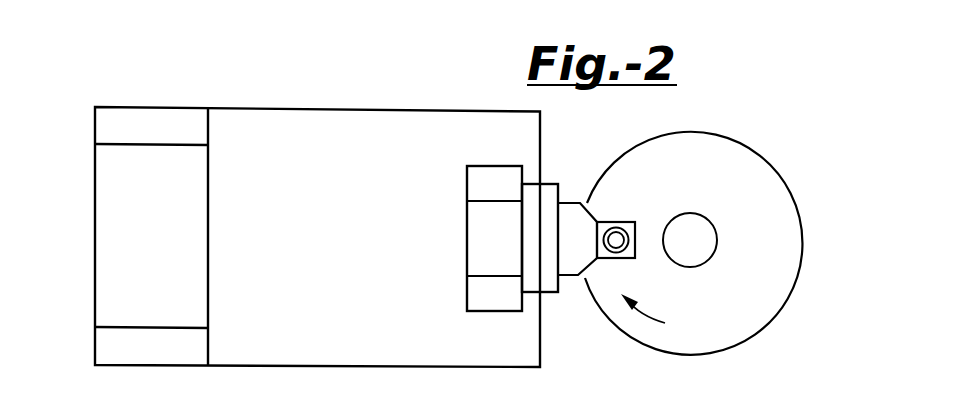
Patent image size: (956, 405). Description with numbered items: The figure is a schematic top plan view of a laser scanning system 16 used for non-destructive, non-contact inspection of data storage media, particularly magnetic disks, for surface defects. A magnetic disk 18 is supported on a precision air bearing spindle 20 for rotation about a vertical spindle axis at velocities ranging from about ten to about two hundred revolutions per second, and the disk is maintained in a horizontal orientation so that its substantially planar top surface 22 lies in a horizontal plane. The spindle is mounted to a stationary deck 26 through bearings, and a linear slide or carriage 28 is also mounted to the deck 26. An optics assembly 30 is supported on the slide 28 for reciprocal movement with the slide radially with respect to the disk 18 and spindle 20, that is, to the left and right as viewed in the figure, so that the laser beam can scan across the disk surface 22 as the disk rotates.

The laser scanning system 16 is at (752, 110).
The magnetic disk 18 is at (802, 258).
The precision air bearing spindle 20 is at (698, 257).
The top surface 22 is at (705, 181).
The stationary deck 26 is at (110, 193).
The linear slide 28 is at (357, 120).
The optics assembly 30 is at (477, 223).